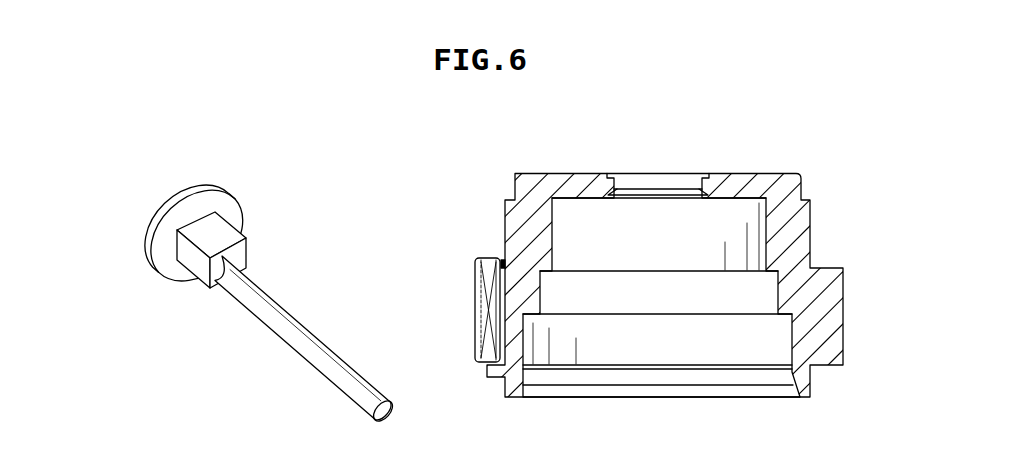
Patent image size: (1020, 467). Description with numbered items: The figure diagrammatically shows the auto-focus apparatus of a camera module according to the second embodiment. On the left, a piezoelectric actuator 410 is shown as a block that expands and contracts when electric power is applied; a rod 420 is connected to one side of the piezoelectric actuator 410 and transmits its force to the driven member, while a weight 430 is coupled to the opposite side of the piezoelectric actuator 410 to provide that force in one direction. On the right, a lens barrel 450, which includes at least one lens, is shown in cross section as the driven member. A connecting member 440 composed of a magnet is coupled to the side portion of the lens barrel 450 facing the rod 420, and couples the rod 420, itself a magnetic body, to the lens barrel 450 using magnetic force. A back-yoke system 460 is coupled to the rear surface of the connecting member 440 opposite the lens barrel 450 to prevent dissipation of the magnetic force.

The piezoelectric actuator 410 is at (200, 272).
The rod 420 is at (312, 352).
The weight 430 is at (172, 210).
The connecting member 440 is at (487, 313).
The lens barrel 450 is at (775, 186).
The back-yoke system 460 is at (503, 262).